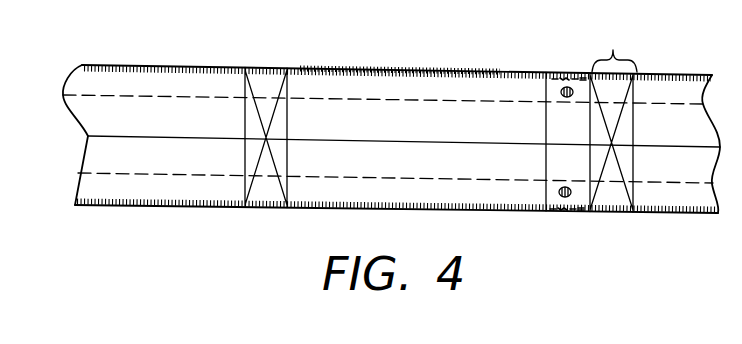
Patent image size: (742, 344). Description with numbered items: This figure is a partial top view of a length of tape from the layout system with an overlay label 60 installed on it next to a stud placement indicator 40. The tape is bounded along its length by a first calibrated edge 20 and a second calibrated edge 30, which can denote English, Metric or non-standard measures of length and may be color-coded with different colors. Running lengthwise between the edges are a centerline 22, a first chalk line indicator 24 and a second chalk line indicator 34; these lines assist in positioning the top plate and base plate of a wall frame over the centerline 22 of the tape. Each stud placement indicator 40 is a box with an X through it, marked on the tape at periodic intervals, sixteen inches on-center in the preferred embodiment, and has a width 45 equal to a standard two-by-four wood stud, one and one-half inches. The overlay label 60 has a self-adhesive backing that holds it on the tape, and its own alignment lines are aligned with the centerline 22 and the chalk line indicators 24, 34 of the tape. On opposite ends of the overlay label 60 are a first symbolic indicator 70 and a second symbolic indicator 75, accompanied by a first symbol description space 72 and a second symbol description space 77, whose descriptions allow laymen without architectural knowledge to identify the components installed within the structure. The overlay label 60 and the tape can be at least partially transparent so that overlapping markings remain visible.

The first calibrated edge 20 is at (159, 207).
The centerline 22 is at (382, 143).
The first chalk line indicator 24 is at (363, 180).
The second calibrated edge 30 is at (402, 70).
The second chalk line indicator 34 is at (387, 104).
The stud placement indicator 40 is at (262, 68).
The width 45 is at (614, 46).
The overlay label 60 is at (546, 186).
The first symbolic indicator 70 is at (572, 192).
The first symbol description space 72 is at (558, 214).
The second symbolic indicator 75 is at (562, 90).
The second symbol description space 77 is at (558, 75).